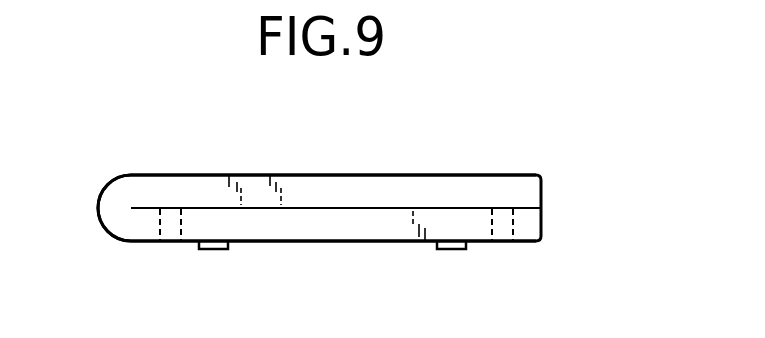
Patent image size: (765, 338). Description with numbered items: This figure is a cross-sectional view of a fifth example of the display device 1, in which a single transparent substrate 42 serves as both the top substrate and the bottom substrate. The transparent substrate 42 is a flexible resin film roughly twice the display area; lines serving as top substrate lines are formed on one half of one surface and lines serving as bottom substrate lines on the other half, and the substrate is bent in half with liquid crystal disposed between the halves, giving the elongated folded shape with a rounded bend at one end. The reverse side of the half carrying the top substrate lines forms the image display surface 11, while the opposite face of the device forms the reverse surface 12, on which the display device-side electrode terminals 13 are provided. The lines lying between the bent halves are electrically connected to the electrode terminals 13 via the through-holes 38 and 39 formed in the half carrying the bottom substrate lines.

The display device 1 is at (562, 163).
The image display surface 11 is at (331, 175).
The reverse surface 12 is at (332, 242).
The display device-side electrode terminals 13 is at (213, 250).
The through-hole 38 is at (170, 242).
The through-hole 39 is at (503, 242).
The transparent substrate 42 is at (97, 200).